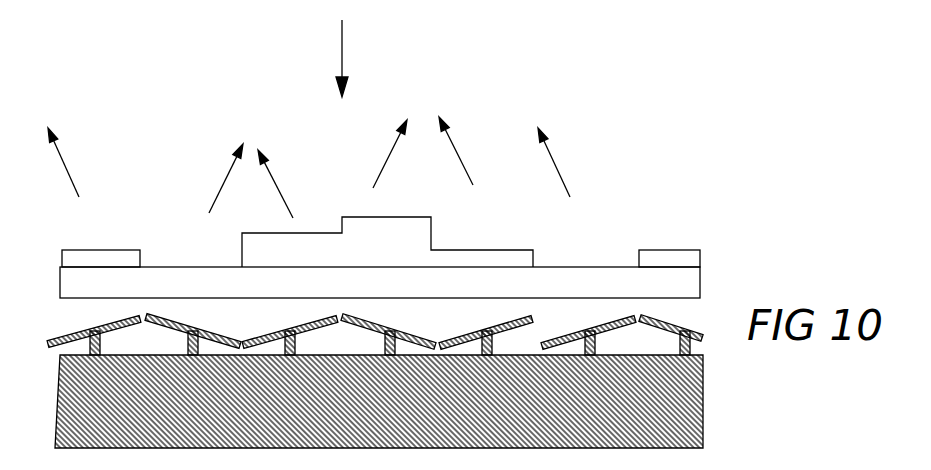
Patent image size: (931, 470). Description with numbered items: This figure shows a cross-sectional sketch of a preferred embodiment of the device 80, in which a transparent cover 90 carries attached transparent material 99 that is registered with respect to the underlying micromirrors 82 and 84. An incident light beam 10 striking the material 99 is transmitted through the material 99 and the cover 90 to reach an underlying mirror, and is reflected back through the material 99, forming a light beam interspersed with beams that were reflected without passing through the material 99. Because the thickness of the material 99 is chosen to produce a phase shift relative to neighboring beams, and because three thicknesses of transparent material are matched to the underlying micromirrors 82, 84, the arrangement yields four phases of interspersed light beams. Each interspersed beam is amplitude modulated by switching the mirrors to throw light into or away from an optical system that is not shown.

The light beam 10 is at (342, 48).
The device 80 is at (765, 373).
The micromirror 82 is at (702, 332).
The micromirror 84 is at (103, 247).
The transparent cover 90 is at (700, 283).
The transparent material 99 is at (668, 250).